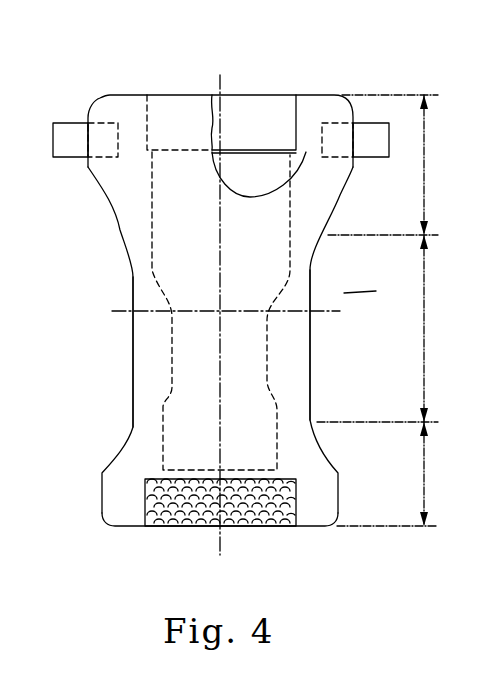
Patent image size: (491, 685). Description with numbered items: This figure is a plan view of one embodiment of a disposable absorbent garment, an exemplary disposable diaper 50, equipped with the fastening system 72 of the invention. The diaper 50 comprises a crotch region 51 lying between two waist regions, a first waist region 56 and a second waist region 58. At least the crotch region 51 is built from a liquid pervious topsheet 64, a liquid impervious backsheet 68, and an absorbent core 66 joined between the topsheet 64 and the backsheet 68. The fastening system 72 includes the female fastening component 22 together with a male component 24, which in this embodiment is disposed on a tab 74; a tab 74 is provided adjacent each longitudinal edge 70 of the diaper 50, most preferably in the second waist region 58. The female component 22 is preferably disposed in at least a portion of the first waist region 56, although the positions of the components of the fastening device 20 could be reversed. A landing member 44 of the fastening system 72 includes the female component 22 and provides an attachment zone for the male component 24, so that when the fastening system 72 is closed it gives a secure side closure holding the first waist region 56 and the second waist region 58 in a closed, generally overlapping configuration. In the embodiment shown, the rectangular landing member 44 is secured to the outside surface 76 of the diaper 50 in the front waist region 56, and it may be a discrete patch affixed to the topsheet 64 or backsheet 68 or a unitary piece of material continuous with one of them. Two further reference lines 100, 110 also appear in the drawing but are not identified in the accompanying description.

The fastening device 20 is at (289, 340).
The female fastening component 22 is at (187, 547).
The male component 24 is at (74, 150).
The landing member 44 is at (163, 517).
The disposable diaper 50 is at (369, 291).
The crotch region 51 is at (385, 328).
The first waist region 56 is at (377, 474).
The second waist region 58 is at (390, 165).
The liquid pervious topsheet 64 is at (305, 107).
The absorbent core 66 is at (268, 182).
The liquid impervious backsheet 68 is at (122, 485).
The longitudinal edge 70 is at (133, 284).
The fastening system 72 is at (93, 86).
The tab 74 is at (66, 135).
The outside surface 76 is at (150, 356).
The lateral centerline 100 is at (328, 313).
The longitudinal centerline 110 is at (220, 545).